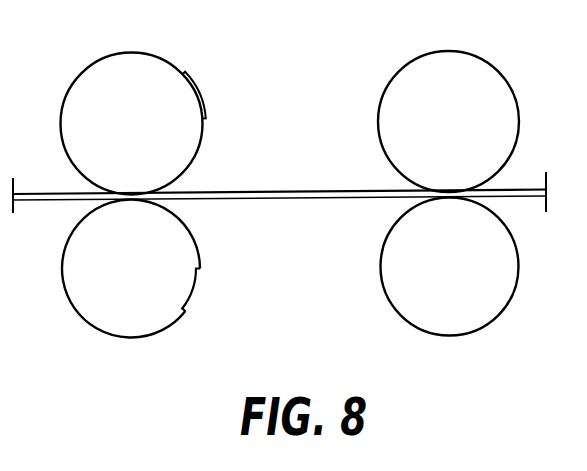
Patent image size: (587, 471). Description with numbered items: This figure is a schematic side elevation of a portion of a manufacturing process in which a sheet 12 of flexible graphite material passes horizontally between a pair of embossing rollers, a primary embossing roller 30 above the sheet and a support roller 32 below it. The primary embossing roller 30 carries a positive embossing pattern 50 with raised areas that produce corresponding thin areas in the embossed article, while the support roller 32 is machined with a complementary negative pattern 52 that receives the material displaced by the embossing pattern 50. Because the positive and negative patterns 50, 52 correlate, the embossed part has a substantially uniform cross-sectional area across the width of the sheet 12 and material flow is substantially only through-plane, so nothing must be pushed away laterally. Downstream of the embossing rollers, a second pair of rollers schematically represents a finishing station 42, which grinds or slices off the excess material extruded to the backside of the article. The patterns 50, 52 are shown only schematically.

The sheet 12 is at (238, 190).
The primary embossing roller 30 is at (157, 78).
The support roller 32 is at (158, 290).
The finishing station 42 is at (472, 72).
The embossing pattern 50 is at (195, 88).
The negative pattern 52 is at (200, 283).